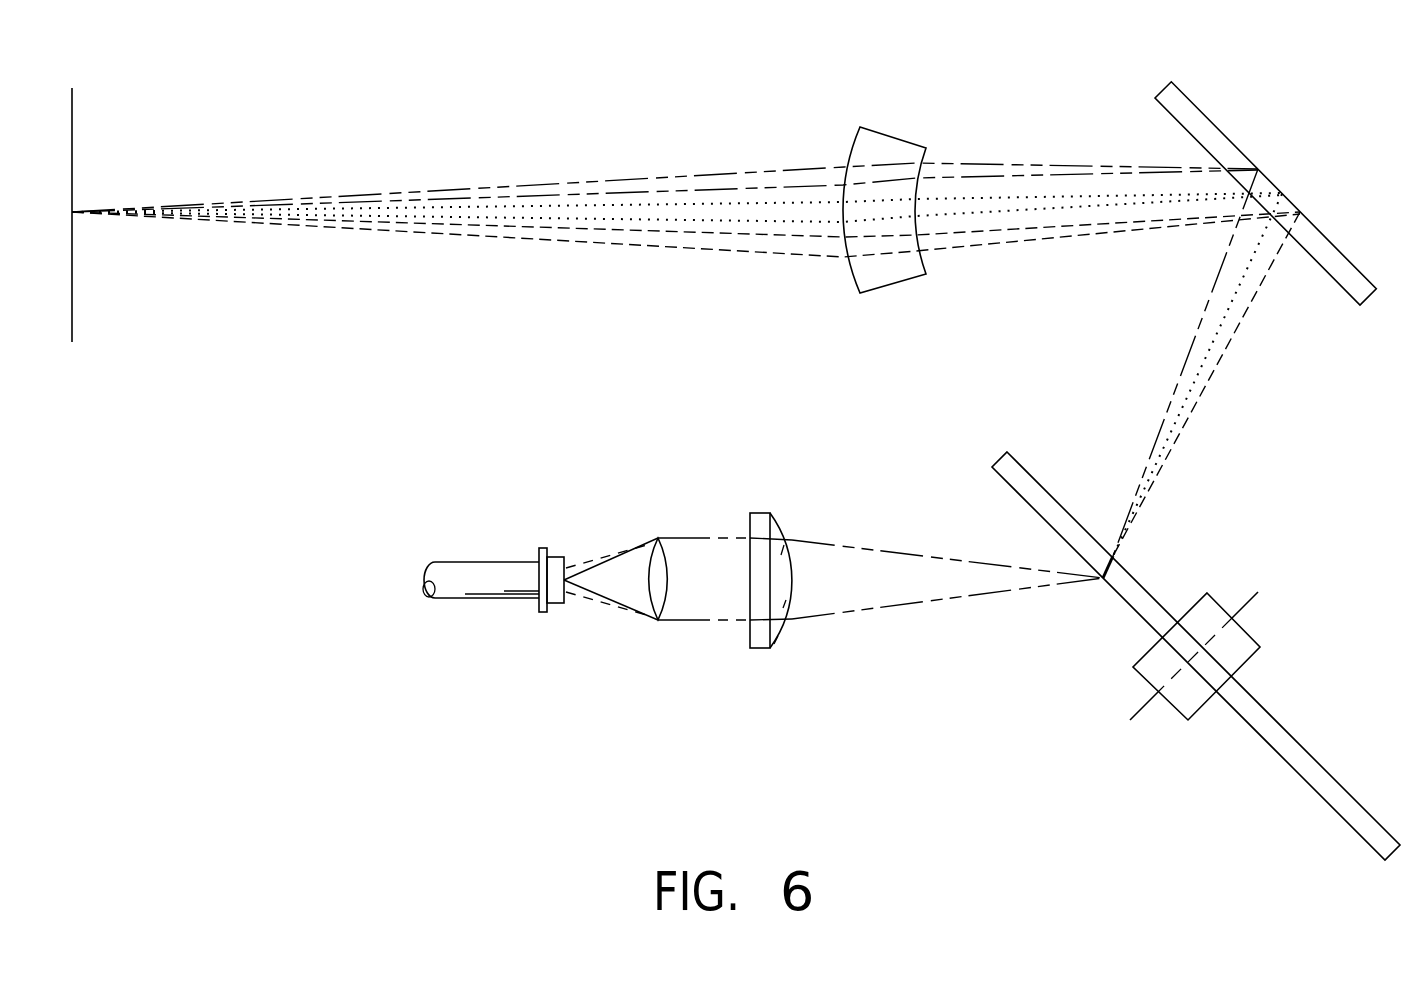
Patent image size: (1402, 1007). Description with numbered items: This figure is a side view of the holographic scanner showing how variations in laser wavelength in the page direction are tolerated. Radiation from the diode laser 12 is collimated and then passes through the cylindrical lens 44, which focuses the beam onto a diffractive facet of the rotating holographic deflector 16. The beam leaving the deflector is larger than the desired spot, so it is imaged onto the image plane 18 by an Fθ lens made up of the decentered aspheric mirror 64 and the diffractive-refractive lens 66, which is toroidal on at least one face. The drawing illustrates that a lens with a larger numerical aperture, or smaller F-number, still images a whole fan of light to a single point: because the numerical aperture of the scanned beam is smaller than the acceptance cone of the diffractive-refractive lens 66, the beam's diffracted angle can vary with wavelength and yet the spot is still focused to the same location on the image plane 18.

The diode laser 12 is at (481, 562).
The holographic deflector 16 is at (1242, 508).
The image plane 18 is at (72, 125).
The cylindrical lens 44 is at (757, 513).
The decentered aspheric mirror 64 is at (1237, 145).
The diffractive-refractive lens 66 is at (893, 135).